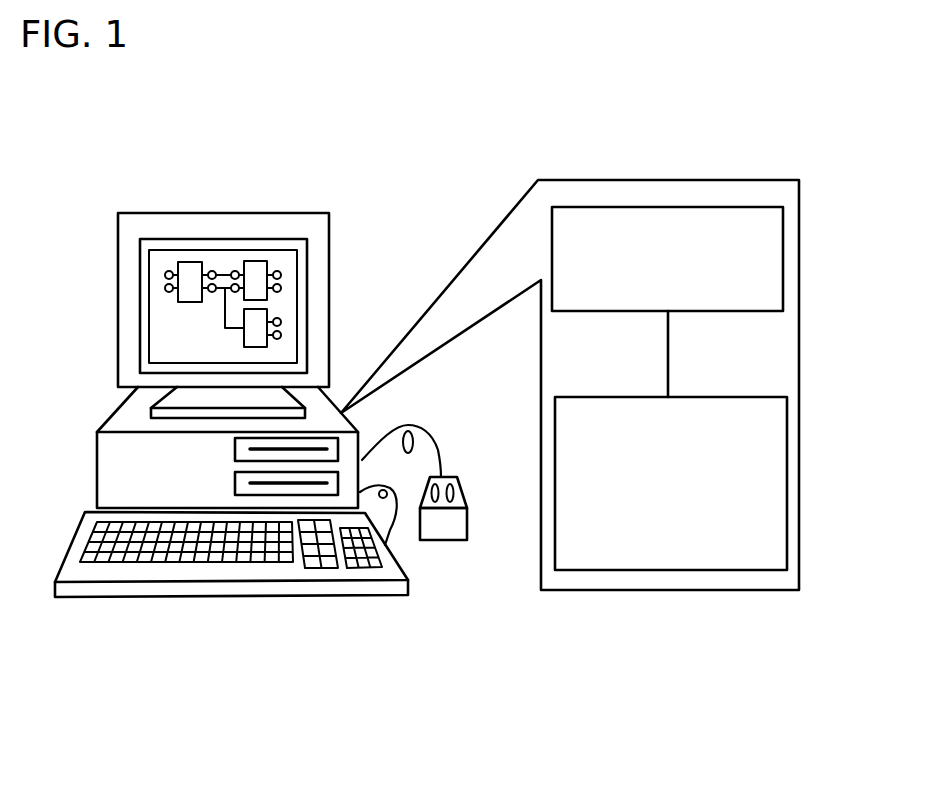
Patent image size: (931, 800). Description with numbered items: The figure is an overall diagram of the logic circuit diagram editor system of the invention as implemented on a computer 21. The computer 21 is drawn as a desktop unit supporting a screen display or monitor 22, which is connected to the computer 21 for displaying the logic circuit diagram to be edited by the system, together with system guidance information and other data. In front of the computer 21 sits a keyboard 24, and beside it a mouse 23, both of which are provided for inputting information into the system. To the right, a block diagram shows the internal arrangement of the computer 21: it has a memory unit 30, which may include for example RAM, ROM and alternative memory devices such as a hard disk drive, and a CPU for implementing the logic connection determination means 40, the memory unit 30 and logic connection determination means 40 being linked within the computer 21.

The computer 21 is at (97, 480).
The monitor 22 is at (160, 212).
The mouse 23 is at (468, 522).
The keyboard 24 is at (210, 597).
The memory unit 30 is at (622, 207).
The logic connection determination means 40 is at (788, 458).